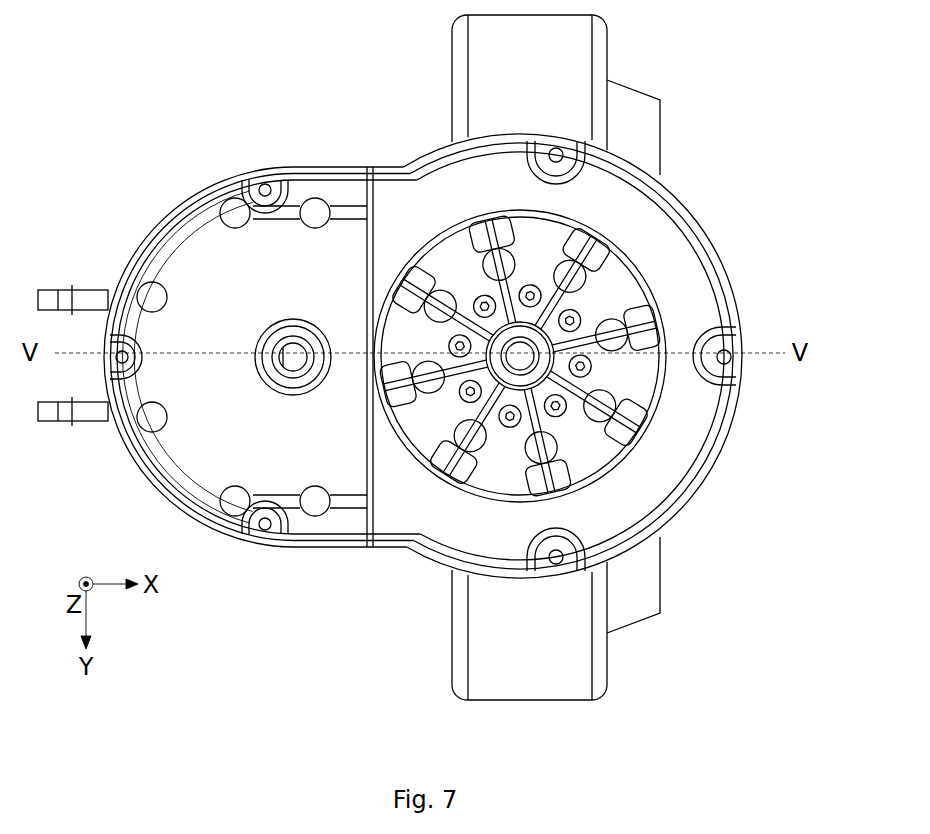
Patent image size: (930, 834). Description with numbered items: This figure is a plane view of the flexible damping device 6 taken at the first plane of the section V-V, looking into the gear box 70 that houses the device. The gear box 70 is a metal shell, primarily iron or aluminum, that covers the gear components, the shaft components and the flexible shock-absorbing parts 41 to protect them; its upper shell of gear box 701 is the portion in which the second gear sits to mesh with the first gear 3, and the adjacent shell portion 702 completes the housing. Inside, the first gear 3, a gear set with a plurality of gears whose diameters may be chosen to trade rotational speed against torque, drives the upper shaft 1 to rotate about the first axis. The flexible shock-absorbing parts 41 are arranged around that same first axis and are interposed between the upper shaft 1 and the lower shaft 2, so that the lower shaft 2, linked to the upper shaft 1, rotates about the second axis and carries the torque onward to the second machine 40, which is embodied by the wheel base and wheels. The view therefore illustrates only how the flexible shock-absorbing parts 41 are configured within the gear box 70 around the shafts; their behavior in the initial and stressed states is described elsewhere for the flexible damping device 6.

The upper shaft 1 is at (535, 367).
The lower shaft 2 is at (540, 395).
The first gear 3 is at (575, 307).
The flexible damping device 6 is at (718, 515).
The second machine 40 is at (544, 393).
The flexible shock-absorbing parts 41 is at (663, 325).
The gear box 70 is at (433, 357).
The upper shell of gear box 701 is at (197, 193).
The second housing portion 702 is at (616, 357).